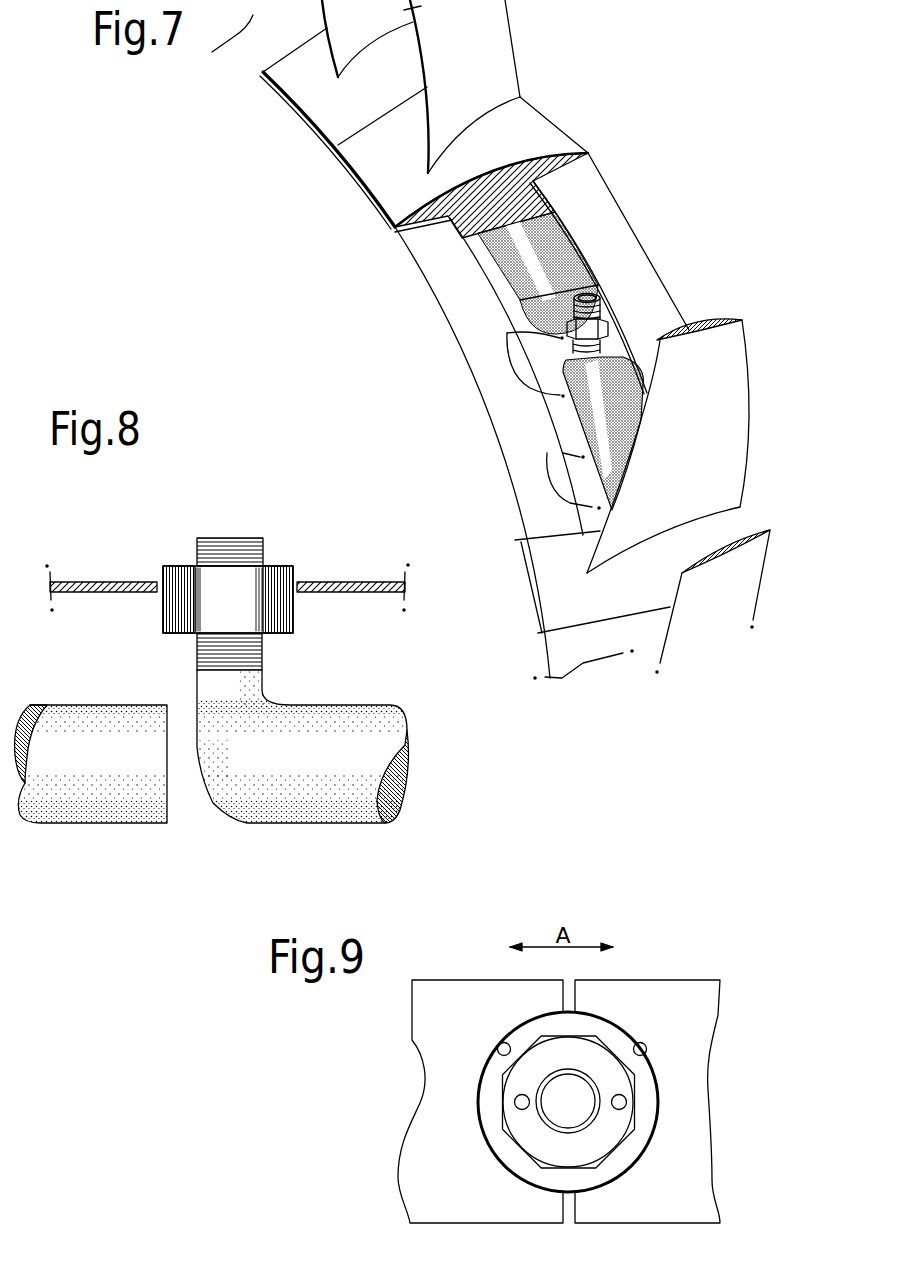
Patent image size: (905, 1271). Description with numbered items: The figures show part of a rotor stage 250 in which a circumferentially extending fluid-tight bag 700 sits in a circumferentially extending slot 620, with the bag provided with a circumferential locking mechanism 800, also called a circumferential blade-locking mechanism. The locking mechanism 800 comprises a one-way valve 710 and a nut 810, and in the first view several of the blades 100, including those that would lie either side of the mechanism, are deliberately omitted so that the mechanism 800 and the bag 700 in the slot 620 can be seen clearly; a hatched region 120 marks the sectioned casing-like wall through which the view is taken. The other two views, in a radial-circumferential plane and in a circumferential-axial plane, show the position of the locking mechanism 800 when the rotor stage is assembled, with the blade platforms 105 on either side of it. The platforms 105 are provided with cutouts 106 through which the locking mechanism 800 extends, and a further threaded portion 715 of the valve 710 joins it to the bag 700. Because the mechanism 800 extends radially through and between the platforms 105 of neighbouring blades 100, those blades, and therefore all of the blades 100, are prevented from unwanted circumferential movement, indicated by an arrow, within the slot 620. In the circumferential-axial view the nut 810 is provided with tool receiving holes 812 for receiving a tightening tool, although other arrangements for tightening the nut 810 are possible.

In FIG. 7, the blade 100 is at (490, 33).
In FIG. 7, the platform 105 is at (535, 107).
In FIG. 8, the platform 105 is at (77, 580).
In FIG. 9, the platform 105 is at (427, 987).
In FIG. 8, the cutout 106 is at (163, 568).
In FIG. 9, the cutout 106 is at (505, 1050).
In FIG. 7, the casing cross-section 120 is at (563, 143).
In FIG. 7, the rotor stage 250 is at (637, 75).
In FIG. 7, the circumferentially extending slot 620 is at (587, 267).
In FIG. 7, the fluid-tight bag 700 is at (513, 283).
In FIG. 8, the fluid-tight bag 700 is at (83, 723).
In FIG. 7, the one-way valve 710 is at (588, 297).
In FIG. 8, the one-way valve 710 is at (270, 477).
In FIG. 9, the one-way valve 710 is at (593, 1118).
In FIG. 8, the lower thread 715 is at (260, 641).
In FIG. 7, the circumferential locking mechanism 800 is at (674, 295).
In FIG. 8, the circumferential locking mechanism 800 is at (228, 543).
In FIG. 9, the circumferential locking mechanism 800 is at (654, 1111).
In FIG. 7, the nut 810 is at (600, 322).
In FIG. 8, the nut 810 is at (257, 583).
In FIG. 9, the nut 810 is at (587, 1157).
In FIG. 9, the tool receiving hole 812 is at (523, 1095).